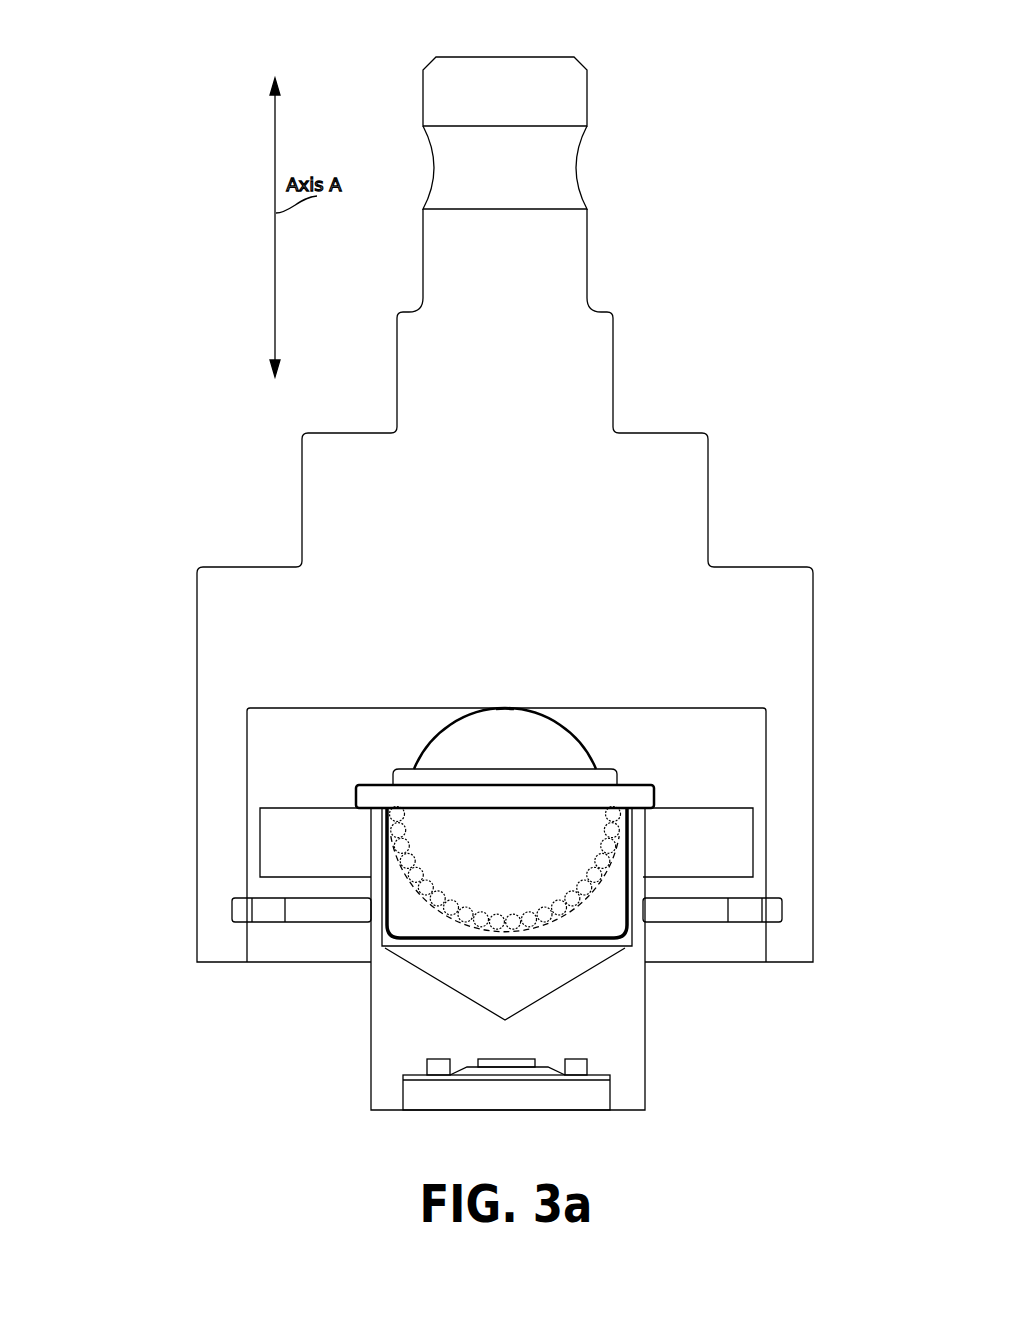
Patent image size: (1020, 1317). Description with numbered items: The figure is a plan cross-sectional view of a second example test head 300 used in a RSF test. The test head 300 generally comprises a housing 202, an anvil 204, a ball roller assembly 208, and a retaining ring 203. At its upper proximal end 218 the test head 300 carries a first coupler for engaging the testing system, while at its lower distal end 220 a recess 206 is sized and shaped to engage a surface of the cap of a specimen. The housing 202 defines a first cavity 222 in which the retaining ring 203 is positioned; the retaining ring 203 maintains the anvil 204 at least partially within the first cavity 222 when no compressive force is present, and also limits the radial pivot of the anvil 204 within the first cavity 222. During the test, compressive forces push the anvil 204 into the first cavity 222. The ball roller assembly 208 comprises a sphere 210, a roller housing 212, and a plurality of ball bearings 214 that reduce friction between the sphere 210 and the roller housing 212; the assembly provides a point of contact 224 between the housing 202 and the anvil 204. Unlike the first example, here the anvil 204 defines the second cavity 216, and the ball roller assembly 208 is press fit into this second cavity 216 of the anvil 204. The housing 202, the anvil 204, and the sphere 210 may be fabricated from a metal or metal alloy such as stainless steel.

The test head 300 is at (140, 157).
The proximal end 218 is at (720, 37).
The housing 202 is at (709, 514).
The first cavity 222 is at (688, 707).
The anvil 204 is at (370, 992).
The retaining ring 203 is at (687, 923).
The ball roller assembly 208 is at (464, 802).
The sphere 210 is at (420, 752).
The point of contact 224 is at (504, 702).
The roller housing 212 is at (631, 784).
The ball bearings 214 is at (477, 907).
The second cavity 216 is at (548, 998).
The recess 206 is at (437, 1111).
The distal end 220 is at (720, 1107).